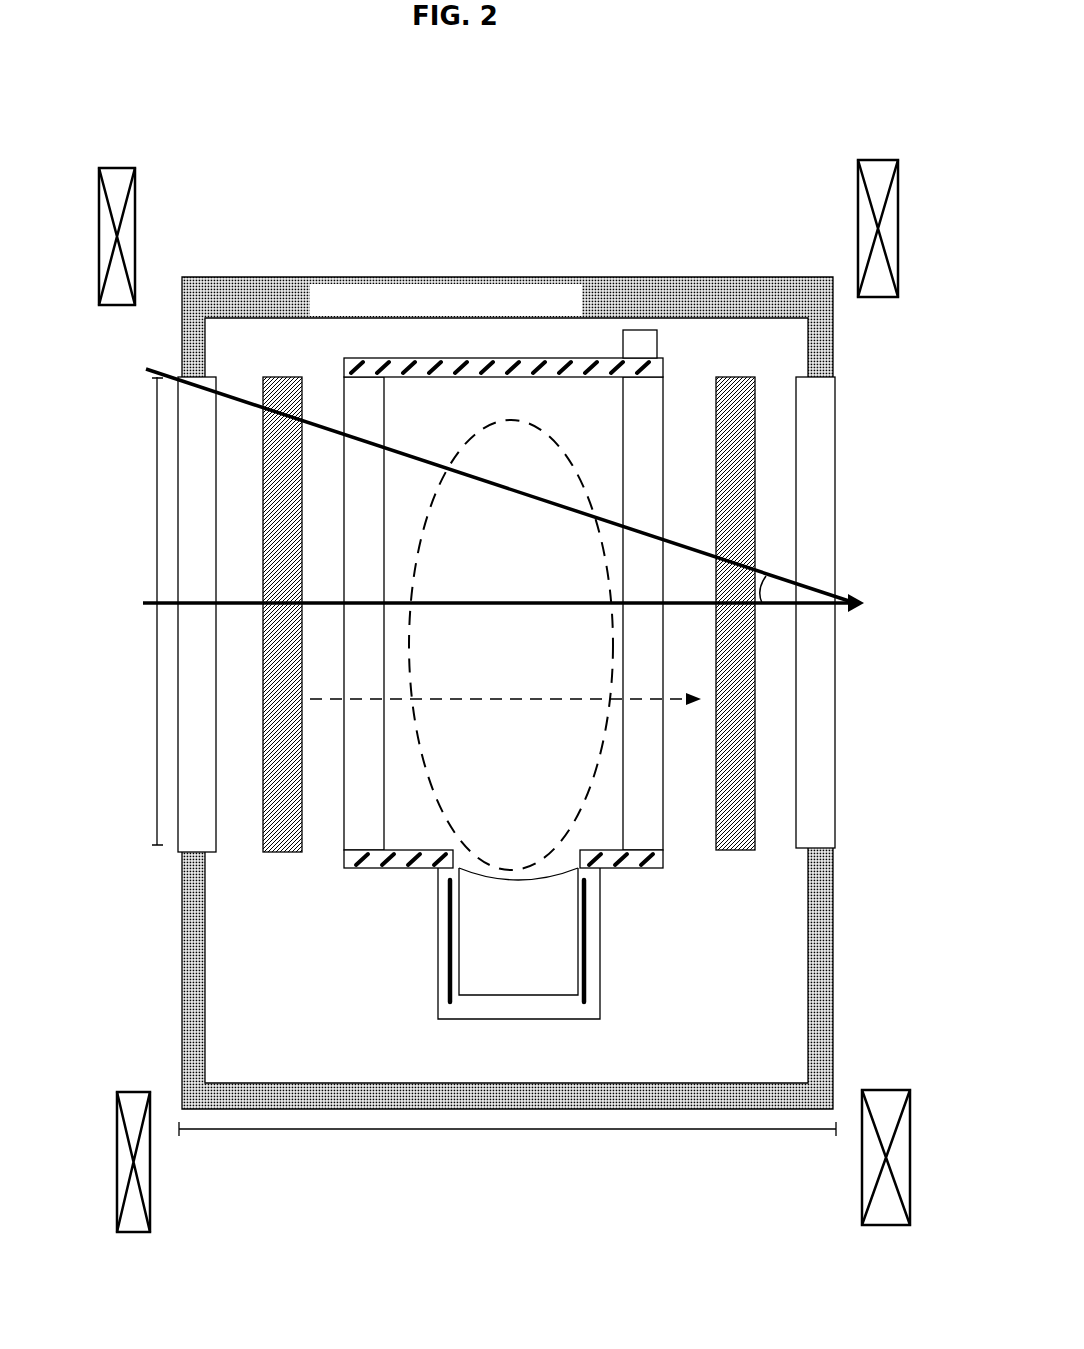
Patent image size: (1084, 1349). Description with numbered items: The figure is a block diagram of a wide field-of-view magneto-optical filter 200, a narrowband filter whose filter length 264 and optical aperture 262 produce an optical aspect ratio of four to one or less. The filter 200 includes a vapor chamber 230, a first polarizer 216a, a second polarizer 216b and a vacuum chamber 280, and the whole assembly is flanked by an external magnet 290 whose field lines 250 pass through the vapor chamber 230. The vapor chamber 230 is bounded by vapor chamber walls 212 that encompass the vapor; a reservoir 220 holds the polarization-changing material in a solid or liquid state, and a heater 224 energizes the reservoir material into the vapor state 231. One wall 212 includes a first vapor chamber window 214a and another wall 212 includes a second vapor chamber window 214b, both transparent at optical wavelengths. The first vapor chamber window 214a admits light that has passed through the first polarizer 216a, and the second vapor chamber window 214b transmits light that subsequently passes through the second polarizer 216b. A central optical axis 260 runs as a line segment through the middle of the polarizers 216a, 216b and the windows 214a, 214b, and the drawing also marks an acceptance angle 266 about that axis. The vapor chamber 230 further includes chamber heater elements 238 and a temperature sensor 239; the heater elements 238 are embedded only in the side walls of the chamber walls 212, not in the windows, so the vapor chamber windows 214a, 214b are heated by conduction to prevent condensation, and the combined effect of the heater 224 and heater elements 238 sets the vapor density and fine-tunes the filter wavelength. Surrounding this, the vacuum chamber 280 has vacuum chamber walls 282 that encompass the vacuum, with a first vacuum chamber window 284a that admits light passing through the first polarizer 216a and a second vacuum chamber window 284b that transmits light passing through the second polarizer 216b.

The wide field-of-view MOF 200 is at (756, 94).
The vapor chamber walls 212 is at (384, 425).
The first vapor chamber window 214a is at (306, 216).
The second vapor chamber window 214b is at (577, 169).
The first polarizer 216a is at (277, 388).
The second polarizer 216b is at (737, 385).
The reservoir 220 is at (501, 919).
The heater 224 is at (453, 967).
The vapor chamber 230 is at (445, 408).
The vapor state 231 is at (488, 653).
The chamber heater elements 238 is at (403, 940).
The temperature sensor 239 is at (458, 93).
The field lines 250 is at (593, 704).
The central optical axis 260 is at (252, 607).
The optical aperture 262 is at (157, 848).
The filter length 264 is at (680, 1129).
The acceptance angle 266 is at (769, 605).
The vacuum chamber 280 is at (360, 347).
The vacuum chamber walls 282 is at (350, 310).
The first vacuum chamber window 284a is at (162, 133).
The second vacuum chamber window 284b is at (715, 148).
The external magnet 290 is at (125, 168).